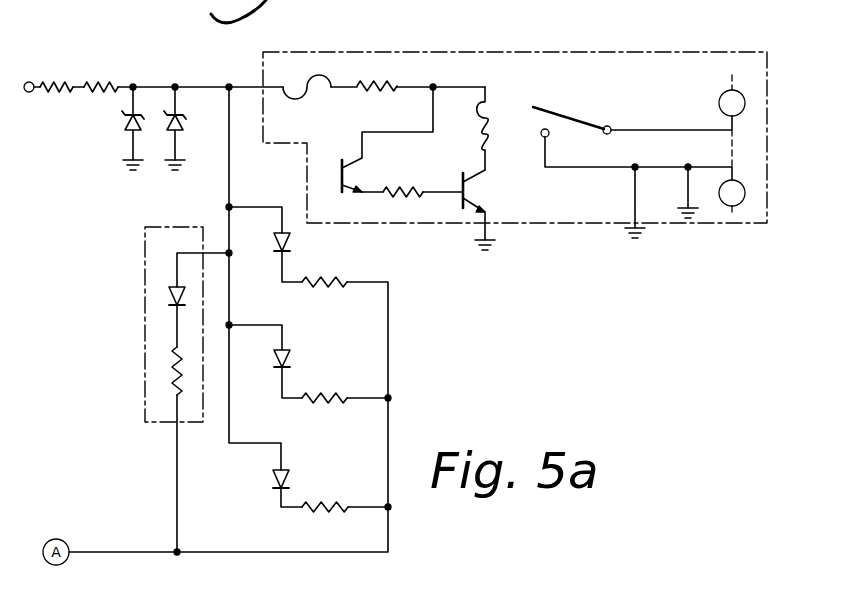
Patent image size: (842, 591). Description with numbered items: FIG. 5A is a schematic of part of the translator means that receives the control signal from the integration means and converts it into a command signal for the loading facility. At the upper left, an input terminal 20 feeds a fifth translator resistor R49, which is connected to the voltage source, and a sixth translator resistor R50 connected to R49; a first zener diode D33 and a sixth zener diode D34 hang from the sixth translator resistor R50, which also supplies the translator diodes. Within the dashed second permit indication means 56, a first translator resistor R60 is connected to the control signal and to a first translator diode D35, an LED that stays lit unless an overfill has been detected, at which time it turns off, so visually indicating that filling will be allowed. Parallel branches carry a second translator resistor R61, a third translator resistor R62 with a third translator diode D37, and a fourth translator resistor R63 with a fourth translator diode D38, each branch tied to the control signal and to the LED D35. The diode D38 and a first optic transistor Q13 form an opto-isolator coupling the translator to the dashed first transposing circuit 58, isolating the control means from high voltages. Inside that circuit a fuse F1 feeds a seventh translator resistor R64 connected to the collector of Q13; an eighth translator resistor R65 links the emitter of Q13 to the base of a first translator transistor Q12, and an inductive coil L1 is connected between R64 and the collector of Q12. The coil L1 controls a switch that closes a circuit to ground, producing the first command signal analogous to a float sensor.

The input terminal 20 is at (31, 81).
The second permit indication means 56 is at (145, 243).
The first transposing circuit 58 is at (623, 52).
The fifth translator resistor R49 is at (56, 99).
The sixth translator resistor R50 is at (102, 79).
The first zener diode D33 is at (120, 128).
The sixth zener diode D34 is at (191, 128).
The fuse F1 is at (307, 94).
The seventh translator resistor R64 is at (377, 97).
The inductive coil L1 is at (496, 128).
The first optic transistor Q13 is at (387, 139).
The eighth translator resistor R65 is at (403, 202).
The first translator transistor Q12 is at (485, 210).
The fourth translator diode D38 is at (300, 257).
The fourth translator resistor R63 is at (324, 274).
The third translator diode D37 is at (300, 367).
The third translator resistor R62 is at (324, 388).
The second translator resistor R61 is at (330, 498).
The first translator diode D35 is at (161, 308).
The first translator resistor R60 is at (159, 371).